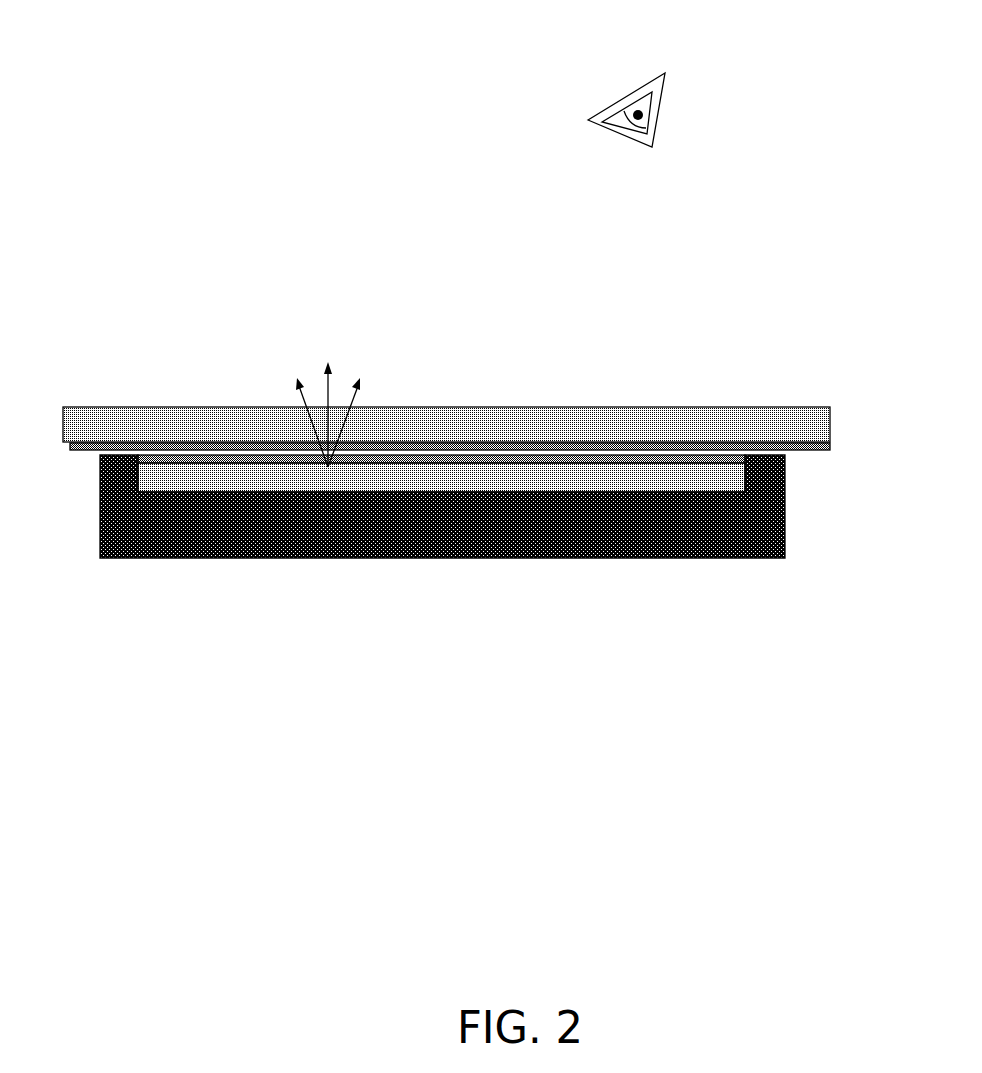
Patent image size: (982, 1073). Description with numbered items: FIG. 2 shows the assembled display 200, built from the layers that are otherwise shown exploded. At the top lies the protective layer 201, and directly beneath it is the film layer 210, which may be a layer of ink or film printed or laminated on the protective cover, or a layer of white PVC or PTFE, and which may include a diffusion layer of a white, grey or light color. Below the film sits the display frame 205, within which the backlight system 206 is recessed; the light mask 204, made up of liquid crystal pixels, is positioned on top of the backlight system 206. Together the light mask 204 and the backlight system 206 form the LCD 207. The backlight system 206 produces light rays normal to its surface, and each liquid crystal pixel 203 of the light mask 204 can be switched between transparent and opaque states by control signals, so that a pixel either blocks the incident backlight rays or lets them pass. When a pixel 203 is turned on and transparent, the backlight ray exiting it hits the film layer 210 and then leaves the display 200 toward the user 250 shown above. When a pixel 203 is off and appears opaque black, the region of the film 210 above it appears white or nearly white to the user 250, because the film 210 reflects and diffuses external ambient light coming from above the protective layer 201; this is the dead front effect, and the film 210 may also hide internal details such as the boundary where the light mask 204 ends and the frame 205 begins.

The display 200 is at (704, 209).
The protective layer 201 is at (123, 418).
The liquid crystal pixel 203 is at (330, 468).
The light mask 204 is at (223, 457).
The display frame 205 is at (240, 490).
The backlight system 206 is at (768, 558).
The LCD 207 is at (586, 588).
The film layer 210 is at (68, 450).
The user 250 is at (608, 82).